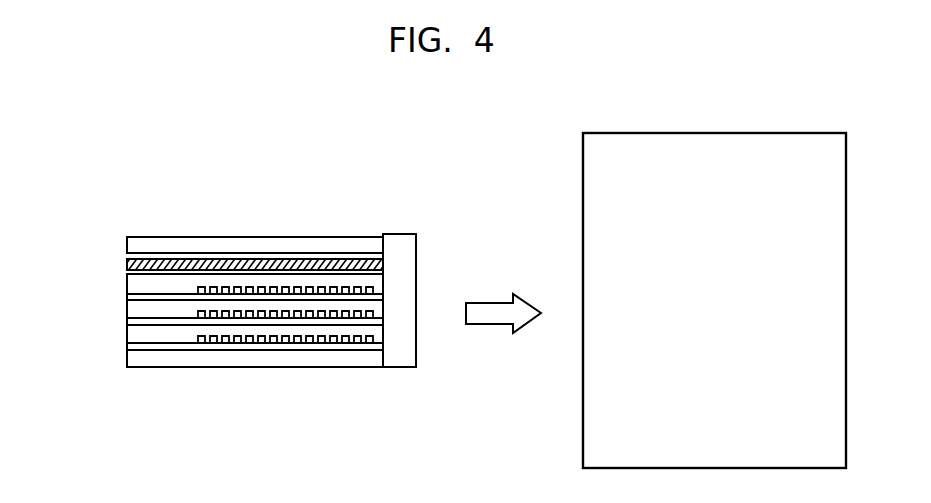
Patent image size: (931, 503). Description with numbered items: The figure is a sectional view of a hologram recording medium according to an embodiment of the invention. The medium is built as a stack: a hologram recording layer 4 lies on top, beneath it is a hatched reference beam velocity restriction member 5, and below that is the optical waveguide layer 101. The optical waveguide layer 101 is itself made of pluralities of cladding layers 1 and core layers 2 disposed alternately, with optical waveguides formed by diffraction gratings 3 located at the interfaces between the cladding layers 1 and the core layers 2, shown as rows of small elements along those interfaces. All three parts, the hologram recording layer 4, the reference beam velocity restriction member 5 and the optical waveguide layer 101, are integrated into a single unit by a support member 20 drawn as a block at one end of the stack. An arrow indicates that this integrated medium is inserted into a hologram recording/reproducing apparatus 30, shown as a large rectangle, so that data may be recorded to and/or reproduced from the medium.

The optical waveguide layer 101 is at (205, 350).
The cladding layers 1 is at (135, 358).
The core layers 2 is at (165, 294).
The diffraction gratings 3 is at (291, 291).
The hologram recording layer 4 is at (265, 237).
The reference beam velocity restriction member 5 is at (127, 264).
The support member 20 is at (400, 258).
The hologram recording/reproducing apparatus 30 is at (751, 143).